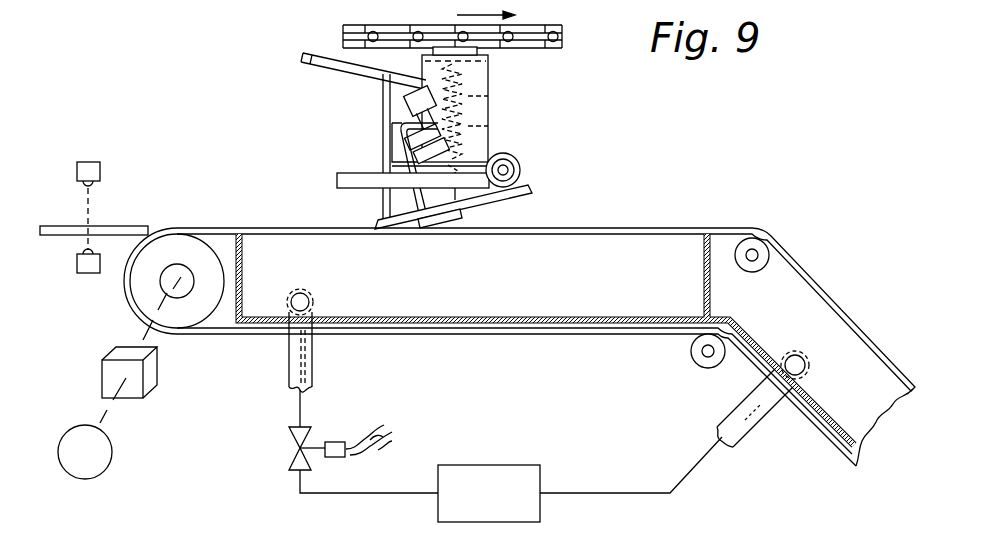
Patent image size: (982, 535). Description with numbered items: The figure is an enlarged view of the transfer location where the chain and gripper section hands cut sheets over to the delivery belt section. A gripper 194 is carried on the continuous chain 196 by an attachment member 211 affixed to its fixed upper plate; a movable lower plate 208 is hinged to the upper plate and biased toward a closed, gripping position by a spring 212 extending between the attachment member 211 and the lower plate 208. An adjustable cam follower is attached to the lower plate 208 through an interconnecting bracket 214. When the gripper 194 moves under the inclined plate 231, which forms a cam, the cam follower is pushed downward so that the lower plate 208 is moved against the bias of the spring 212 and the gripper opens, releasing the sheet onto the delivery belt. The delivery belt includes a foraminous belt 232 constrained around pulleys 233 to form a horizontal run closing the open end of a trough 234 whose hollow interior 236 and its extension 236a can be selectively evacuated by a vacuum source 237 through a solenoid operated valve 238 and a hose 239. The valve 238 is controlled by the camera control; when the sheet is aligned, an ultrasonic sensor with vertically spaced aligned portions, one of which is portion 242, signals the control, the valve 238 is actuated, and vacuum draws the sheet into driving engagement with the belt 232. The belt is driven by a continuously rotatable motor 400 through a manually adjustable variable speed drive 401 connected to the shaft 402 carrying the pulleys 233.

The continuous chain 196 is at (522, 48).
The attachment member 211 is at (488, 116).
The spring 212 is at (495, 91).
The inclined plate 231 is at (321, 61).
The interconnecting bracket 214 is at (396, 153).
The movable lower plate 208 is at (521, 171).
The gripper 194 is at (519, 193).
The sensor portion 242 is at (88, 274).
The foraminous belt 232 is at (597, 237).
The trough 234 is at (468, 318).
The pulley 233 is at (187, 318).
The shaft 402 is at (176, 272).
The variable speed drive 401 is at (115, 348).
The motor 400 is at (112, 451).
The hollow interior 236 is at (518, 296).
The plenum extension 236a is at (842, 402).
The hose 239 is at (311, 369).
The solenoid operated valve 238 is at (333, 458).
The vacuum source 237 is at (484, 465).